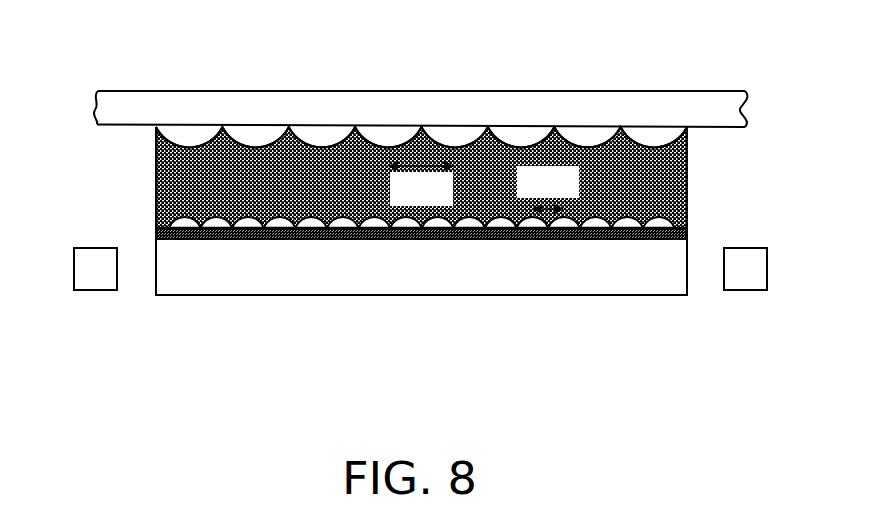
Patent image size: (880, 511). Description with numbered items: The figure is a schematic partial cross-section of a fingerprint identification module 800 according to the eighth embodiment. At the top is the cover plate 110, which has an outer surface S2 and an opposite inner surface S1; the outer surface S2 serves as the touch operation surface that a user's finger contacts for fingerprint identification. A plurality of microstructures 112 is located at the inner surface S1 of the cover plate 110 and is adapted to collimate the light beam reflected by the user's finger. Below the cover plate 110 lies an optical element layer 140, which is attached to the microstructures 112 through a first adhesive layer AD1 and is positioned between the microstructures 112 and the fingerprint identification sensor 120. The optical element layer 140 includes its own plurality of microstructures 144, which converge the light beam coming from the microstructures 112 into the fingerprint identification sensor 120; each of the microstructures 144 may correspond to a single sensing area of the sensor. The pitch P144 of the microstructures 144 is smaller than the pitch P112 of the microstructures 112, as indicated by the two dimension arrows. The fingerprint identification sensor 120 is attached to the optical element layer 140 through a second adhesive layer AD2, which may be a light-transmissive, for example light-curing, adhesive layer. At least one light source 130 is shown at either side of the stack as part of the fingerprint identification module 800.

The fingerprint identification module 800 is at (420, 217).
The cover plate 110 is at (450, 110).
The microstructures 112 is at (457, 131).
The inner surface S1 is at (724, 129).
The outer surface S2 is at (724, 90).
The fingerprint identification sensor 120 is at (415, 272).
The light source 130 is at (85, 267).
The optical element layer 140 is at (489, 220).
The microstructures 144 is at (683, 215).
The first adhesive layer AD1 is at (180, 186).
The second adhesive layer AD2 is at (157, 237).
The pitch of the microstructures P112 is at (421, 187).
The pitch of the microstructures P144 is at (548, 187).